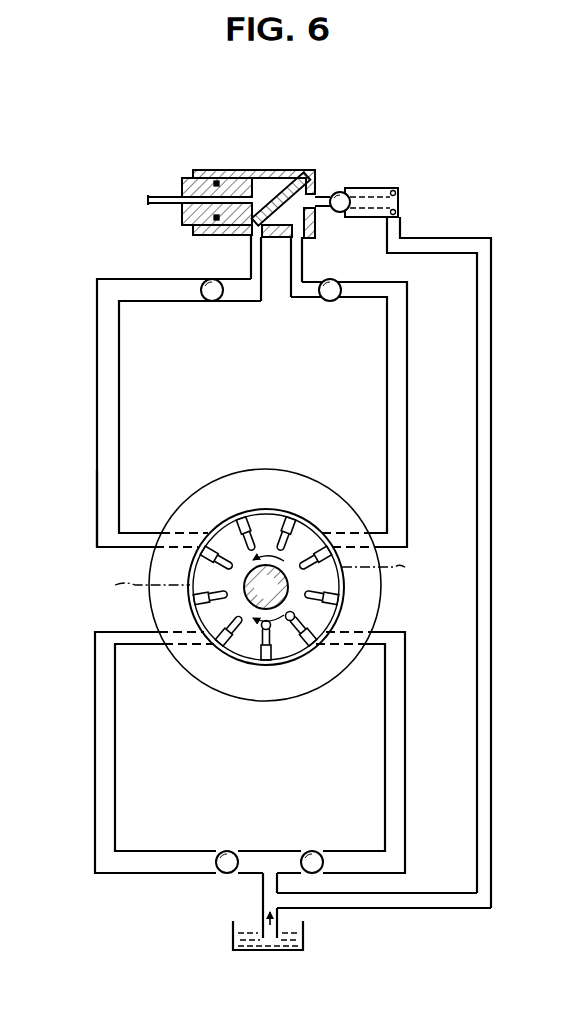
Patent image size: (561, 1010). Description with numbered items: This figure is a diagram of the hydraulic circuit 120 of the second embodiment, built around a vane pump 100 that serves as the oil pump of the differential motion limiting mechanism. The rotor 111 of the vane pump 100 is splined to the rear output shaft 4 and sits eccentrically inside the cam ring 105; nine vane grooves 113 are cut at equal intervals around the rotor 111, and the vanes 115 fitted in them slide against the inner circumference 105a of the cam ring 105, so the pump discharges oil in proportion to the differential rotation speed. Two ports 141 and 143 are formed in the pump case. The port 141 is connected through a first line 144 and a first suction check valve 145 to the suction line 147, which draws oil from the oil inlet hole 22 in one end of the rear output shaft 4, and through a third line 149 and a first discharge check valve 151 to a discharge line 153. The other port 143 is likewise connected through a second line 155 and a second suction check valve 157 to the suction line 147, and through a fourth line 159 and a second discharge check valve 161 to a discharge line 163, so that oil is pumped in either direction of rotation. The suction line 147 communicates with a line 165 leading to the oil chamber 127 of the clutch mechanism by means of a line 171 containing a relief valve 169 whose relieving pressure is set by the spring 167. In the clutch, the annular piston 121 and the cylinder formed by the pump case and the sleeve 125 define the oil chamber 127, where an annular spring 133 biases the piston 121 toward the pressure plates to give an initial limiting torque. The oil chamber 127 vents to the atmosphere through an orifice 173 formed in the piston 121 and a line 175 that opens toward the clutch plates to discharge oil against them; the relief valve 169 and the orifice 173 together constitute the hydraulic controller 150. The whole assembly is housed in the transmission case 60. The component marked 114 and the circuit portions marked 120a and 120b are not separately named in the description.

The control valve 114 is at (240, 178).
The annular piston 121 is at (214, 170).
The sleeve 125 is at (299, 170).
The oil chamber 127 is at (322, 183).
The annular spring 133 is at (298, 200).
The orifice 173 is at (181, 190).
The line 175 is at (180, 204).
The hydraulic controller 150 is at (140, 198).
The line 165 is at (335, 208).
The relief valve 169 is at (344, 193).
The spring 167 is at (402, 190).
The discharge line 153 is at (250, 254).
The discharge line 163 is at (291, 268).
The first discharge check valve 151 is at (211, 302).
The second discharge check valve 161 is at (330, 302).
The upper hydraulic circuit loop 120b is at (242, 413).
The third line 149 is at (97, 396).
The fourth line 159 is at (407, 396).
The hydraulic circuit 120 is at (90, 487).
The vane pump 100 is at (262, 577).
The cam ring 105 is at (310, 487).
The inner circumference of the cam ring 105a is at (257, 512).
The rotor 111 is at (325, 590).
The vane grooves 113 is at (256, 655).
The vanes 115 is at (273, 655).
The rear output shaft 4 is at (275, 599).
The port 141 is at (138, 585).
The port 143 is at (390, 570).
The lower hydraulic circuit loop 120a is at (242, 752).
The first line 144 is at (95, 826).
The second line 155 is at (405, 756).
The first suction check valve 145 is at (226, 851).
The second suction check valve 157 is at (312, 851).
The suction line 147 is at (262, 893).
The oil inlet hole 22 is at (262, 925).
The line 171 is at (432, 893).
The transmission case 60 is at (303, 936).